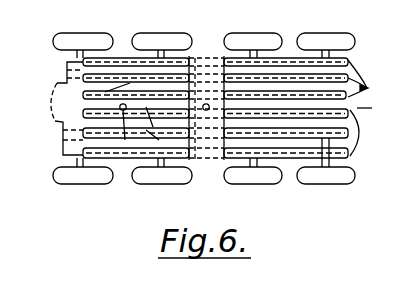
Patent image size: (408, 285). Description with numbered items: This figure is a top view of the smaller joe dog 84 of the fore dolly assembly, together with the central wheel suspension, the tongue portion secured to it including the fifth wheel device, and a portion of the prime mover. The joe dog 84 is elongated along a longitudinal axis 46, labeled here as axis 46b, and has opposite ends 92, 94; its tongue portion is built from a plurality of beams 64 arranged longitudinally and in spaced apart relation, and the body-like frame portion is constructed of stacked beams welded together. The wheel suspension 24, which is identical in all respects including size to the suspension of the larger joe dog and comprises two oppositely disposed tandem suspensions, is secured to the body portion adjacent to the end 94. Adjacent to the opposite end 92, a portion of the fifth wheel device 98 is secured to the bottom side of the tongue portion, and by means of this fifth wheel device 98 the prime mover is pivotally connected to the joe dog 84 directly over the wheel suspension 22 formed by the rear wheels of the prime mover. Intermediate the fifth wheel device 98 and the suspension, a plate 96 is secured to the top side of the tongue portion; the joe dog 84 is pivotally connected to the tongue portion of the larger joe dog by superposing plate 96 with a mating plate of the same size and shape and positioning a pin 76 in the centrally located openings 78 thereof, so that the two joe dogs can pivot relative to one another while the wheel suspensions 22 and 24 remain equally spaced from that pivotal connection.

The wheel suspension 22 is at (118, 44).
The pin 76 is at (124, 104).
The openings 78 is at (206, 103).
The joe dog 84 is at (254, 38).
The axis 46b is at (300, 108).
The beams 64 is at (378, 108).
The end 92 is at (83, 107).
The fifth wheel device 98 is at (125, 140).
The frame member 46 is at (168, 138).
The plate 96 is at (203, 158).
The wheel suspension 24 is at (288, 180).
The end 94 is at (352, 176).